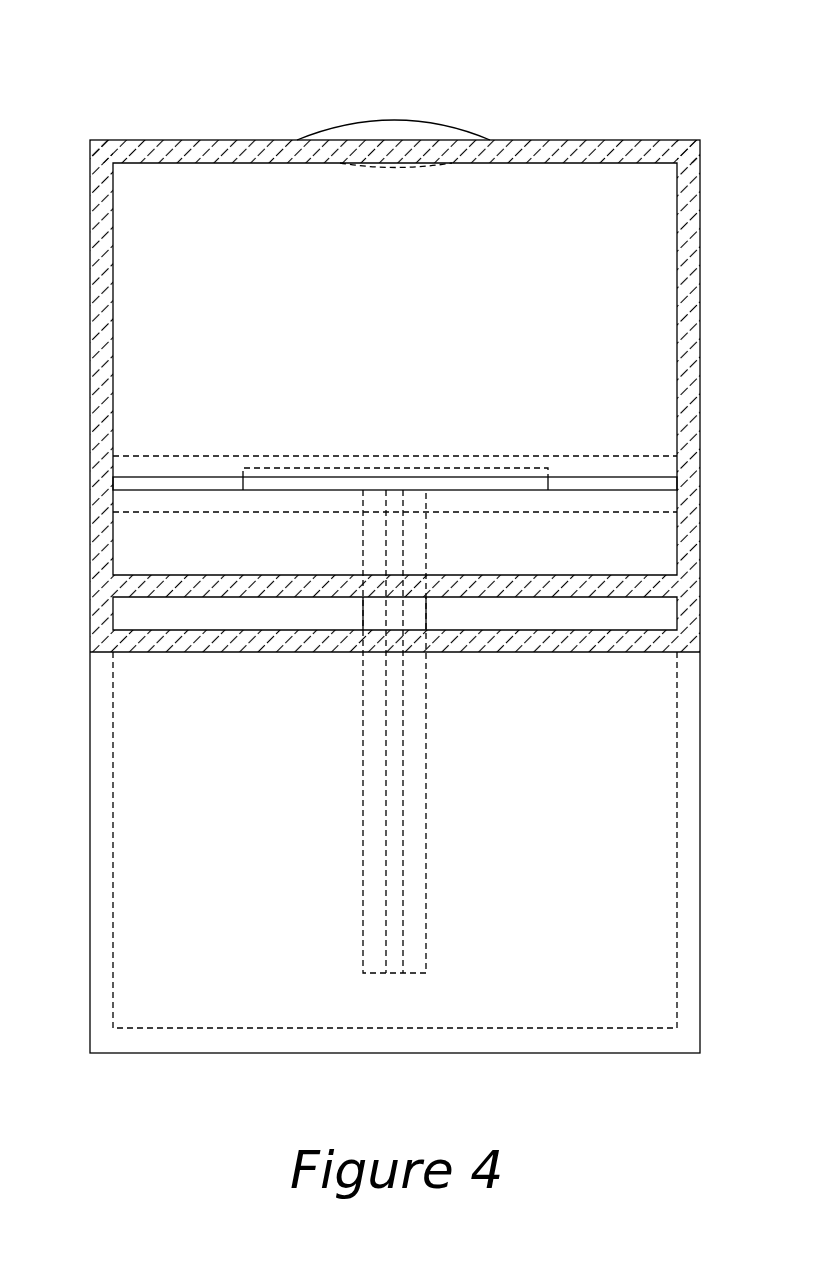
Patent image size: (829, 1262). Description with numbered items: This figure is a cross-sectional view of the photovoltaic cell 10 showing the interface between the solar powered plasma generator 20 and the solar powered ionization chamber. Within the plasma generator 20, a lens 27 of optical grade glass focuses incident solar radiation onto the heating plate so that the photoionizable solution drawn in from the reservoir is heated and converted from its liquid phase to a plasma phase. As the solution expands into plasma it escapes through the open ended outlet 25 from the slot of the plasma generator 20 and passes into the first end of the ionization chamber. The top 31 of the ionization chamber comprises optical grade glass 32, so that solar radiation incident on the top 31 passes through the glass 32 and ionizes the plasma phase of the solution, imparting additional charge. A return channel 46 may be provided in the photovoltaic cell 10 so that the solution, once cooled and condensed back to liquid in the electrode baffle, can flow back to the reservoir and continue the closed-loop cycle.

The photovoltaic cell 10 is at (414, 526).
The top of the solar powered ionization chamber 31 is at (160, 150).
The lens 27 is at (392, 132).
The optical grade glass 32 is at (607, 152).
The open ended outlet 25 is at (237, 487).
The solar powered plasma generator 20 is at (503, 425).
The return channel 46 is at (252, 612).